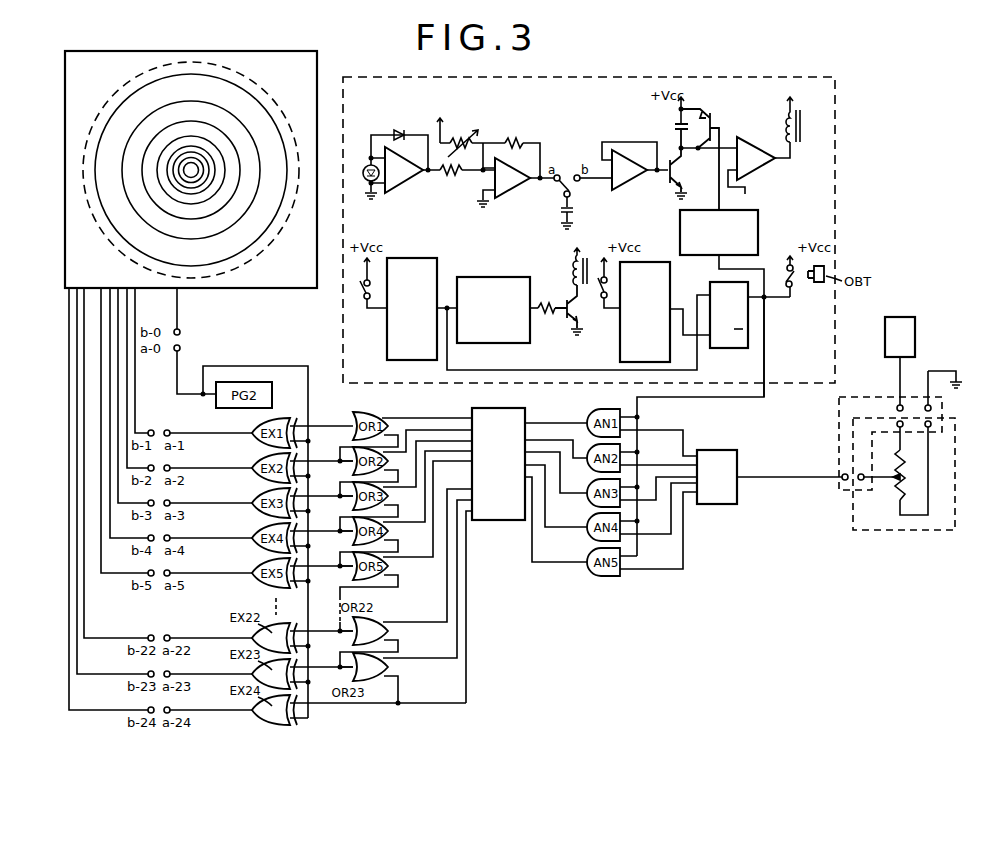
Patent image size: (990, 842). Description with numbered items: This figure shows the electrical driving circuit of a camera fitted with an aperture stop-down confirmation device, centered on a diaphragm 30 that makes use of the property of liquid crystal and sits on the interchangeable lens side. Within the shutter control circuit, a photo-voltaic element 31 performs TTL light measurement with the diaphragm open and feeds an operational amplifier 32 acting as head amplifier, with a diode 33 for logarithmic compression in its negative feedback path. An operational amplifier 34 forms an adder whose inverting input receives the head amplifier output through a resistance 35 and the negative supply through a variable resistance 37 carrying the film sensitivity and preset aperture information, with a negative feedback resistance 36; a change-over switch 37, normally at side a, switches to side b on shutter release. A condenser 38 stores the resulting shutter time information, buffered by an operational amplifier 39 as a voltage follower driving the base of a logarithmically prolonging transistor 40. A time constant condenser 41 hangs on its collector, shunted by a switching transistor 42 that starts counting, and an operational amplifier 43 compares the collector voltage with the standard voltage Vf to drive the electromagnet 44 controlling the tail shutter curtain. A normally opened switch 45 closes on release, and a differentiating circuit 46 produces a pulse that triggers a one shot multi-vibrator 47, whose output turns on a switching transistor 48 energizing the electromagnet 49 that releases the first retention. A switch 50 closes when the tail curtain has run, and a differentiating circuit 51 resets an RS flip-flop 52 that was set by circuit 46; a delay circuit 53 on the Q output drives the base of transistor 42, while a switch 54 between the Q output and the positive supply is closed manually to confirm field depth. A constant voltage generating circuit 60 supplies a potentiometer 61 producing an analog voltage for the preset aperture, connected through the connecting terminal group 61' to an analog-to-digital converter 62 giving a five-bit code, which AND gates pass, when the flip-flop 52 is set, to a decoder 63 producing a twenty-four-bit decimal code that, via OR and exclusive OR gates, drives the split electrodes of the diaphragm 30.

The diaphragm 30 is at (65, 200).
The photo-voltaic element 31 is at (363, 180).
The operational amplifier 32 is at (404, 170).
The diode 33 is at (401, 130).
The operational amplifier 34 is at (512, 178).
The resistance 35 is at (452, 175).
The negative feedback resistance 36 is at (515, 139).
The variable resistance / change over switch 37 is at (473, 135).
The condenser 38 is at (575, 213).
The operational amplifier 39 is at (635, 166).
The logarithmically prolonging transistor 40 is at (683, 178).
The time constant condenser 41 is at (674, 128).
The switching transistor 42 is at (705, 112).
The operational amplifier 43 is at (759, 171).
The electromagnet 44 is at (805, 129).
The normally opened switch 45 is at (362, 292).
The differentiating circuit 46 is at (420, 258).
The one shot multi-vibrator 47 is at (515, 277).
The switching transistor 48 is at (566, 322).
The electromagnet 49 is at (590, 272).
The normally opened switch 50 is at (603, 297).
The differentiating circuit 51 is at (650, 262).
The RS flip-flop 52 is at (738, 348).
The delay circuit 53 is at (758, 226).
The normally opened switch 54 is at (795, 287).
The constant voltage generating circuit 60 is at (900, 337).
The potentiometer 61 is at (904, 474).
The connecting terminal group 61' is at (910, 443).
The analog-to-digital converter 62 is at (730, 505).
The decoder 63 is at (503, 520).